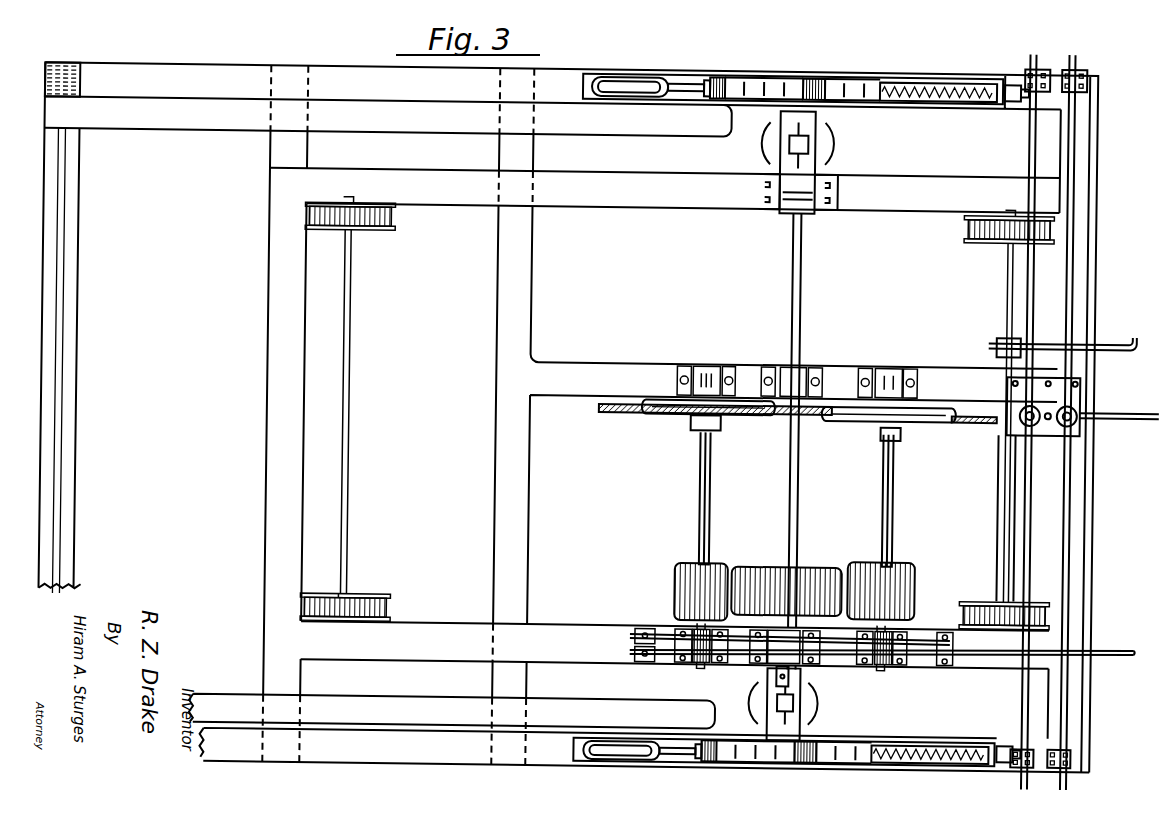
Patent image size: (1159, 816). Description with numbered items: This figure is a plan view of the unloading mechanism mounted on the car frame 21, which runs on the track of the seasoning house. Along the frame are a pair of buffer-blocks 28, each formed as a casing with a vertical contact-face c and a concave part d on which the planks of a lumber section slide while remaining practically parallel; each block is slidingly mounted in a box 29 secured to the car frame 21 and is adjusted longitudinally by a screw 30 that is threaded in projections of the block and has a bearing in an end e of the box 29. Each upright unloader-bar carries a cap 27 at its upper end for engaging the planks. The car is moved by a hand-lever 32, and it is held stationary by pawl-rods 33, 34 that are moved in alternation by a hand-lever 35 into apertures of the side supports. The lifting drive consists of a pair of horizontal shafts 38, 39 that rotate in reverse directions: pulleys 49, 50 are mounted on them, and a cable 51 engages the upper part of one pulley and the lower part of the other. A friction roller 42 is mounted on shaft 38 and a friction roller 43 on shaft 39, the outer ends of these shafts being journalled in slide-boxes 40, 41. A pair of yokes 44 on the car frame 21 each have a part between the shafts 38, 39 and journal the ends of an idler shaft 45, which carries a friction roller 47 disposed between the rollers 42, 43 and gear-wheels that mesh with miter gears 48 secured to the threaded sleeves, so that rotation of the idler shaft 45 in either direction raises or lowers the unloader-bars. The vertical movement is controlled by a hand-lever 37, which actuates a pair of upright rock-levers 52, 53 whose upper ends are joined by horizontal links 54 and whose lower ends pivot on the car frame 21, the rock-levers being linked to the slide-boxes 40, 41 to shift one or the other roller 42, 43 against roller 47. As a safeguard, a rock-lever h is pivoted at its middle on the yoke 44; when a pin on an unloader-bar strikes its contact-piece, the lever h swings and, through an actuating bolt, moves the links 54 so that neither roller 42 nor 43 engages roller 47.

The car frame 21 is at (500, 480).
The cap 27 is at (788, 140).
The buffer-block 28 is at (763, 80).
The box 29 is at (700, 758).
The screw 30 is at (885, 760).
The hand-lever 32 is at (1105, 342).
The pawl-rod 33 is at (1015, 490).
The pawl-rod 34 is at (1071, 510).
The hand-lever 35 is at (1120, 410).
The hand-lever 37 is at (1108, 648).
The horizontal shaft 38 is at (895, 470).
The horizontal shaft 39 is at (714, 470).
The slide-box 40 is at (900, 663).
The slide-box 41 is at (692, 663).
The friction roller 42 is at (910, 575).
The friction roller 43 is at (693, 580).
The yoke 44 is at (793, 200).
The idler shaft 45 is at (800, 300).
The friction roller 47 is at (815, 575).
The miter gear 48 is at (828, 141).
The pulley 49 is at (935, 428).
The pulley 50 is at (745, 425).
The cable 51 is at (615, 415).
The rock-lever 52 is at (965, 657).
The rock-lever 53 is at (633, 637).
The horizontal link 54 is at (925, 652).
The vertical contact-face c is at (805, 80).
The concave part d is at (835, 84).
The end of the box e is at (1005, 762).
The rock-lever h is at (795, 676).